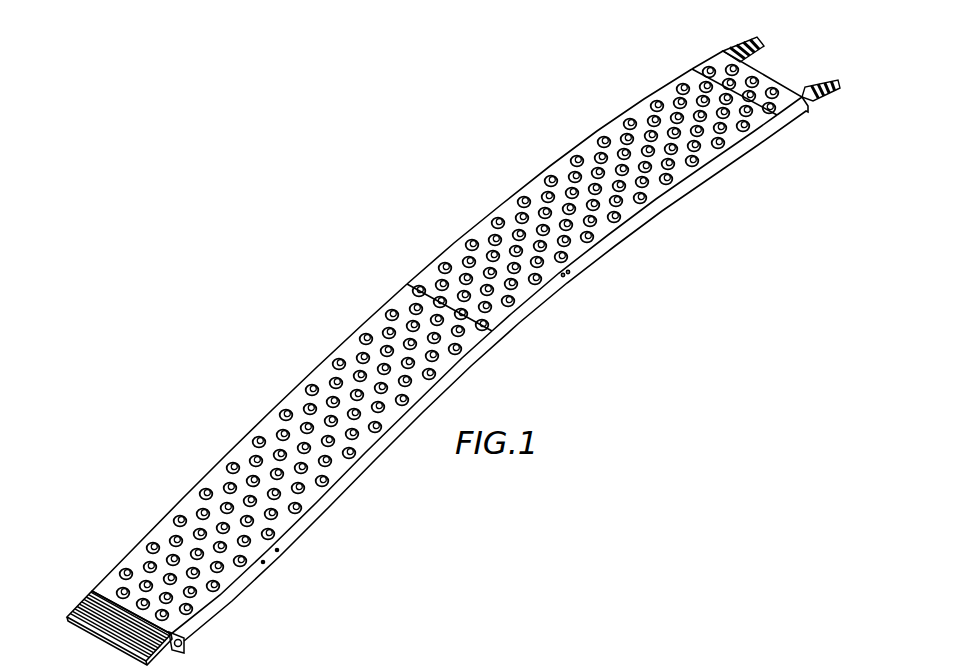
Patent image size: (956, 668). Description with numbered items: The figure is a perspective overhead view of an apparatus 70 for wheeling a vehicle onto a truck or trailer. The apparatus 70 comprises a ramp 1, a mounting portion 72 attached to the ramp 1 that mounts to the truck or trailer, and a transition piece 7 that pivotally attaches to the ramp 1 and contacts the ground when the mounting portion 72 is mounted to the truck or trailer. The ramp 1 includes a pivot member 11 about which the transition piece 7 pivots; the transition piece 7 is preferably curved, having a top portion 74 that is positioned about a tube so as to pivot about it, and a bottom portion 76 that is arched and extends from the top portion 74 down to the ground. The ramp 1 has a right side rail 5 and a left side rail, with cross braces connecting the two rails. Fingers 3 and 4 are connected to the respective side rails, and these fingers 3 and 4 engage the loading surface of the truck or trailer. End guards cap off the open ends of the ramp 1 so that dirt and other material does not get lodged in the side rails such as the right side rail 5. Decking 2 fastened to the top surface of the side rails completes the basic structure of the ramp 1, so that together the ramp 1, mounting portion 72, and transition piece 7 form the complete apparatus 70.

The apparatus 70 is at (450, 336).
The ramp 1 is at (368, 319).
The decking 2 is at (561, 168).
The finger 3 is at (760, 42).
The finger 4 is at (833, 83).
The right side rail 5 is at (546, 296).
The transition piece 7 is at (88, 590).
The pivot member 11 is at (186, 641).
The mounting portion 72 is at (832, 109).
The top portion 74 is at (718, 33).
The bottom portion 76 is at (131, 575).